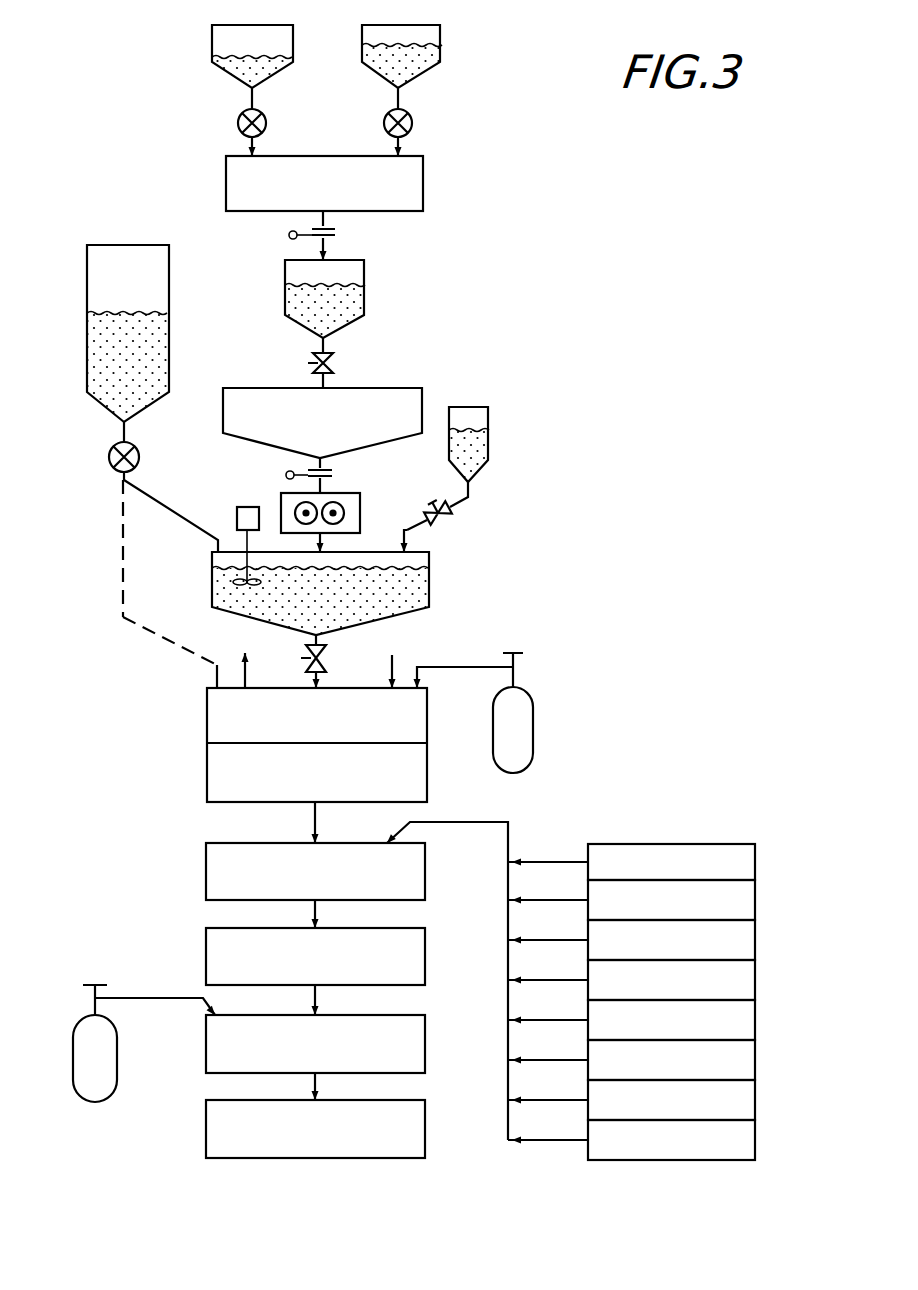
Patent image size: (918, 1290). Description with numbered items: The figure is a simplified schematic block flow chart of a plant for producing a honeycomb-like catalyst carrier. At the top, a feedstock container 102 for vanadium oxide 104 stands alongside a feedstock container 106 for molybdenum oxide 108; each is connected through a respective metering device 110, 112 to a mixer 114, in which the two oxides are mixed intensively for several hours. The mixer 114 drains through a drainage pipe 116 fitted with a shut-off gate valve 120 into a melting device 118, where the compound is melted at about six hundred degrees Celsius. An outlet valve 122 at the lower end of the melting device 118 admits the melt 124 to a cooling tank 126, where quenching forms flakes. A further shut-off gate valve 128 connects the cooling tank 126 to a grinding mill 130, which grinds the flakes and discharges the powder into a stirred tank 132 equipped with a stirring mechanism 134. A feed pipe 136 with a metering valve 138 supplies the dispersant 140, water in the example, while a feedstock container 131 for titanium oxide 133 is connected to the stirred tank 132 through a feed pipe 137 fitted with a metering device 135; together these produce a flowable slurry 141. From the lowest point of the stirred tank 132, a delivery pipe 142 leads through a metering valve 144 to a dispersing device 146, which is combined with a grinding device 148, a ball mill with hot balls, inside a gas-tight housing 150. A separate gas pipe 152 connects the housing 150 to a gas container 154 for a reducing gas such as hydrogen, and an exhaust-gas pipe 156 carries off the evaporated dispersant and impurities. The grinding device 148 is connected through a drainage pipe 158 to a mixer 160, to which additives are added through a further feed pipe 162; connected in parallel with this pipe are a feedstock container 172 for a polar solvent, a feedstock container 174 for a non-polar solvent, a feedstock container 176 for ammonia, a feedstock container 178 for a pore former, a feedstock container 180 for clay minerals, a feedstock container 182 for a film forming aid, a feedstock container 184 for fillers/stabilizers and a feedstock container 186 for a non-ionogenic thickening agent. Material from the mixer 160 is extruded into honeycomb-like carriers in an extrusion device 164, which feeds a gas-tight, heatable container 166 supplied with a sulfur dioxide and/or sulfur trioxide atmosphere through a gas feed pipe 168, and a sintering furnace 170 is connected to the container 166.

The feedstock container 102 is at (440, 30).
The vanadium oxide 104 is at (385, 71).
The feedstock container 106 is at (212, 42).
The molybdenum oxide 108 is at (230, 68).
The metering device 110 is at (238, 123).
The metering device 112 is at (412, 118).
The mixer 114 is at (423, 188).
The drainage pipe 116 is at (330, 243).
The melting device 118 is at (364, 268).
The shut-off gate valve 120 is at (289, 235).
The outlet valve 122 is at (332, 368).
The melt 124 is at (352, 305).
The cooling tank 126 is at (223, 400).
The shut-off gate valve 128 is at (286, 475).
The grinding mill 130 is at (360, 508).
The feedstock container 131 is at (87, 250).
The stirred tank 132 is at (212, 593).
The titanium oxide 133 is at (100, 356).
The stirring mechanism 134 is at (238, 512).
The metering device 135 is at (109, 456).
The feed pipe 136 is at (416, 532).
The feed pipe 137 is at (152, 492).
The metering valve 138 is at (452, 510).
The dispersant 140 is at (480, 440).
The slurry 141 is at (429, 585).
The delivery pipe 142 is at (326, 680).
The metering valve 144 is at (308, 646).
The dispersing device 146 is at (406, 708).
The grinding device 148 is at (207, 795).
The gas-tight housing 150 is at (207, 745).
The gas pipe 152 is at (478, 667).
The gas container 154 is at (533, 715).
The exhaust-gas pipe 156 is at (220, 684).
The drainage pipe 158 is at (315, 822).
The mixer 160 is at (206, 878).
The feed pipe 162 is at (468, 822).
The extrusion device 164 is at (206, 952).
The gas-tight, heatable container 166 is at (222, 1055).
The gas feed pipe 168 is at (140, 998).
The sintering furnace 170 is at (392, 656).
The feedstock container 172 is at (755, 858).
The feedstock container 174 is at (755, 900).
The feedstock container 176 is at (755, 942).
The feedstock container 178 is at (755, 982).
The feedstock container 180 is at (755, 1022).
The feedstock container 182 is at (755, 1062).
The feedstock container 184 is at (755, 1104).
The feedstock container 186 is at (755, 1146).